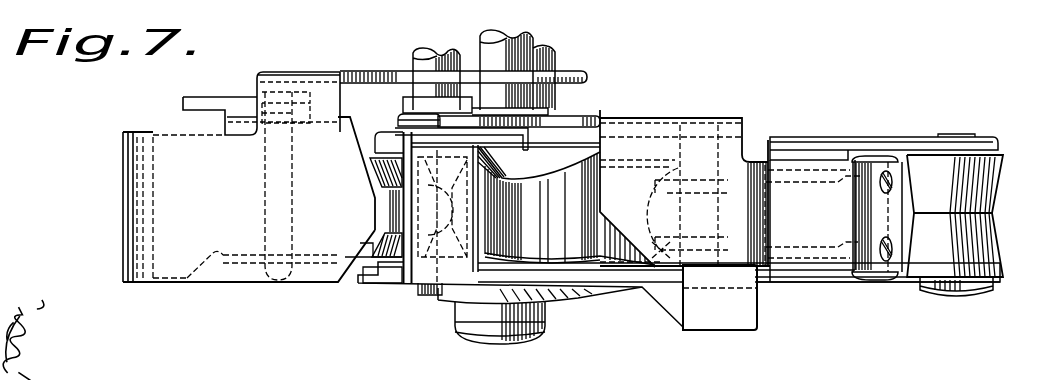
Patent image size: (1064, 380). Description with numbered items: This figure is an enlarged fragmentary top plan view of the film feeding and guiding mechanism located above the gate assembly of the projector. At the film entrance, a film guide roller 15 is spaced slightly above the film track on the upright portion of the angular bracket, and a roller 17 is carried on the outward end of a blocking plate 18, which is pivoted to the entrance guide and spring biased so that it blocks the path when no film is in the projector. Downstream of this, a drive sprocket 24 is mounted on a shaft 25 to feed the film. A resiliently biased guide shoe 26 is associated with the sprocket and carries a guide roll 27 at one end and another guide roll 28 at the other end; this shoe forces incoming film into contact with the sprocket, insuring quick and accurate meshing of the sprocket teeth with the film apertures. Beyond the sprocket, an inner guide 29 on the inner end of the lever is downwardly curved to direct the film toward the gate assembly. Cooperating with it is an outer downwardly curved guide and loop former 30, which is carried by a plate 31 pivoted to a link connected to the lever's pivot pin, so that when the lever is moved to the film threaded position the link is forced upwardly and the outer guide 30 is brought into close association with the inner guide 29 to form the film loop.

The film guide roller 15 is at (995, 282).
The roller 17 is at (894, 157).
The blocking plate 18 is at (822, 168).
The drive sprocket 24 is at (567, 296).
The shaft 25 is at (502, 333).
The guide shoe 26 is at (572, 181).
The guide roll 27 is at (730, 178).
The guide roll 28 is at (374, 166).
The inner guide 29 is at (195, 240).
The outer guide and loop former 30 is at (170, 148).
The plate 31 is at (568, 88).